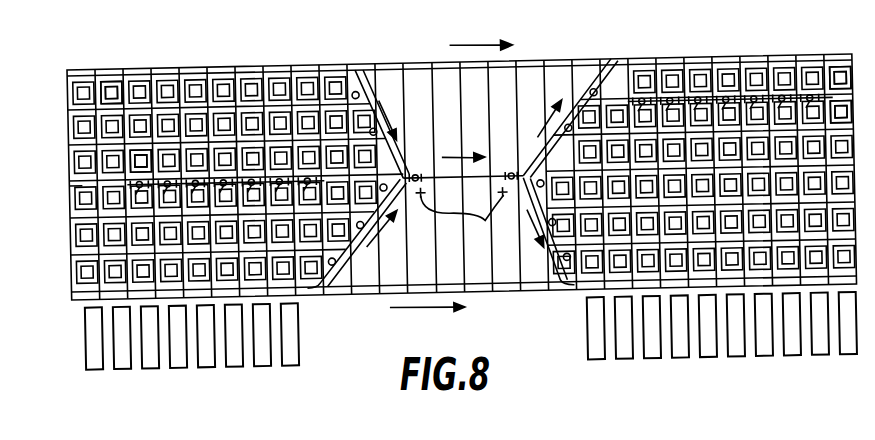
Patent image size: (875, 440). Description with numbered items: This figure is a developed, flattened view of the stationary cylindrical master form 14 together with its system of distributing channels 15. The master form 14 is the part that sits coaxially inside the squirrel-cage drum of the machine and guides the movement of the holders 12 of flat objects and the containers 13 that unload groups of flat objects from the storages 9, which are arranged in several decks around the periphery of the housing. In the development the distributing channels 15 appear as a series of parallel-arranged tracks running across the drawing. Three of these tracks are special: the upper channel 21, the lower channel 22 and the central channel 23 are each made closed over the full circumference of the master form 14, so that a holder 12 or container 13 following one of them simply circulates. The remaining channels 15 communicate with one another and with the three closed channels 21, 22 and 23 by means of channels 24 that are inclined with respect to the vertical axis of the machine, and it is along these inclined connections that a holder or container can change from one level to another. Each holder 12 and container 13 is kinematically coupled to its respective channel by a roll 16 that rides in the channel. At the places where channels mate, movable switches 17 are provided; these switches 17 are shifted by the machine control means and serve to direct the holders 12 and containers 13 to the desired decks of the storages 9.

The storages 9 is at (840, 119).
The holders 12 is at (461, 221).
The containers 13 is at (241, 187).
The cylindrical master form 14 is at (523, 94).
The distributing channels 15 is at (143, 152).
The roll 16 is at (475, 180).
The switches 17 is at (590, 128).
The upper channel 21 is at (232, 55).
The lower channel 22 is at (77, 298).
The central channel 23 is at (72, 190).
The inclined channels 24 is at (575, 85).